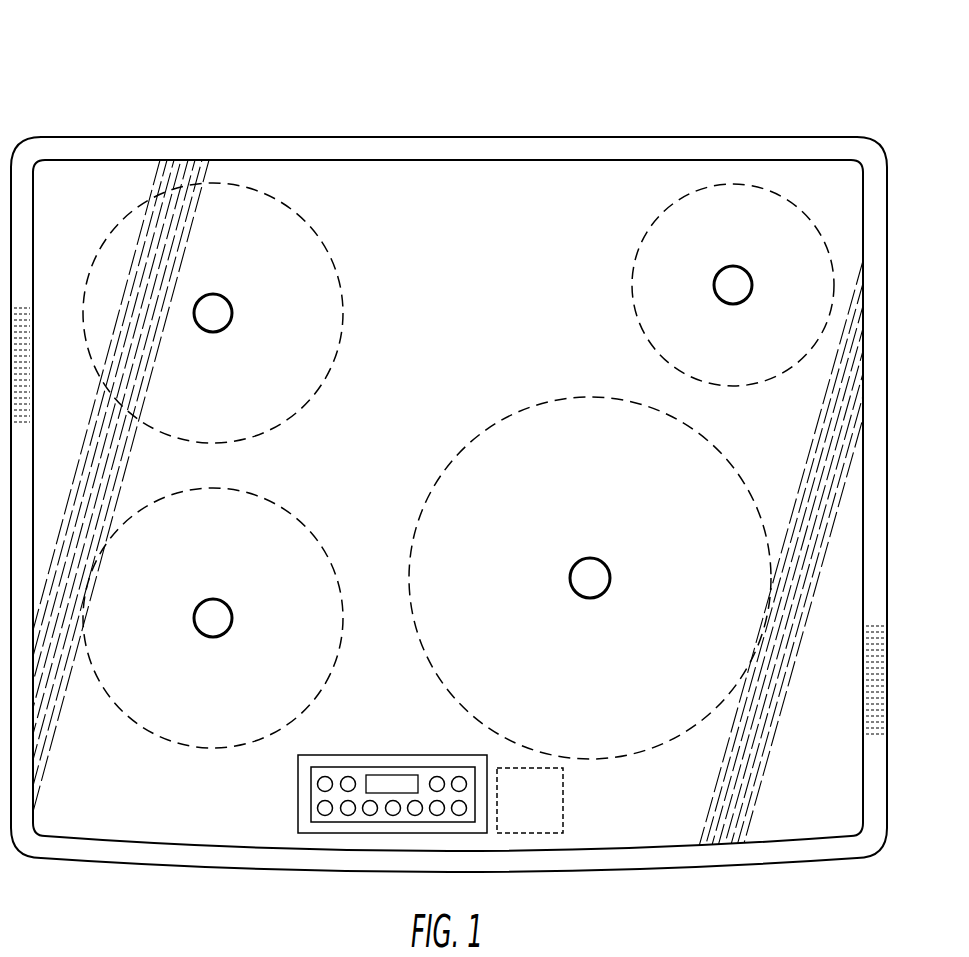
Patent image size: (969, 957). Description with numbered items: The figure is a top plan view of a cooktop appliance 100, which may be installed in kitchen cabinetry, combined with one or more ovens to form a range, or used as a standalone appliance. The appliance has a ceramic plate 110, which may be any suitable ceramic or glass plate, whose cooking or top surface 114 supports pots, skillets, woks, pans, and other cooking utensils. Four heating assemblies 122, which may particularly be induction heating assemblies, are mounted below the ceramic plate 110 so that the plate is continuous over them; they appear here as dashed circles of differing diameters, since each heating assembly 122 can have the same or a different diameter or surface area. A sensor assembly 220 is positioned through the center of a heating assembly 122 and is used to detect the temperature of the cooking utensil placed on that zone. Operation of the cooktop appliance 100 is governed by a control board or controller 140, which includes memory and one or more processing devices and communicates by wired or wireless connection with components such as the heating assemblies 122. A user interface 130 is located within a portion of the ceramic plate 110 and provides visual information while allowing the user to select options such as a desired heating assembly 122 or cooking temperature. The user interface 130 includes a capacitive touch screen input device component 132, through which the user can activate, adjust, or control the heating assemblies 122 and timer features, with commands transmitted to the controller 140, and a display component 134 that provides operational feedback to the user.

The cooktop appliance 100 is at (114, 64).
The ceramic plate 110 is at (635, 183).
The top surface 114 is at (272, 430).
The heating assemblies 122 is at (638, 318).
The sensor assembly 220 is at (232, 310).
The user interface 130 is at (303, 805).
The capacitive touch screen input device component 132 is at (348, 777).
The display component 134 is at (390, 773).
The controller 140 is at (563, 790).